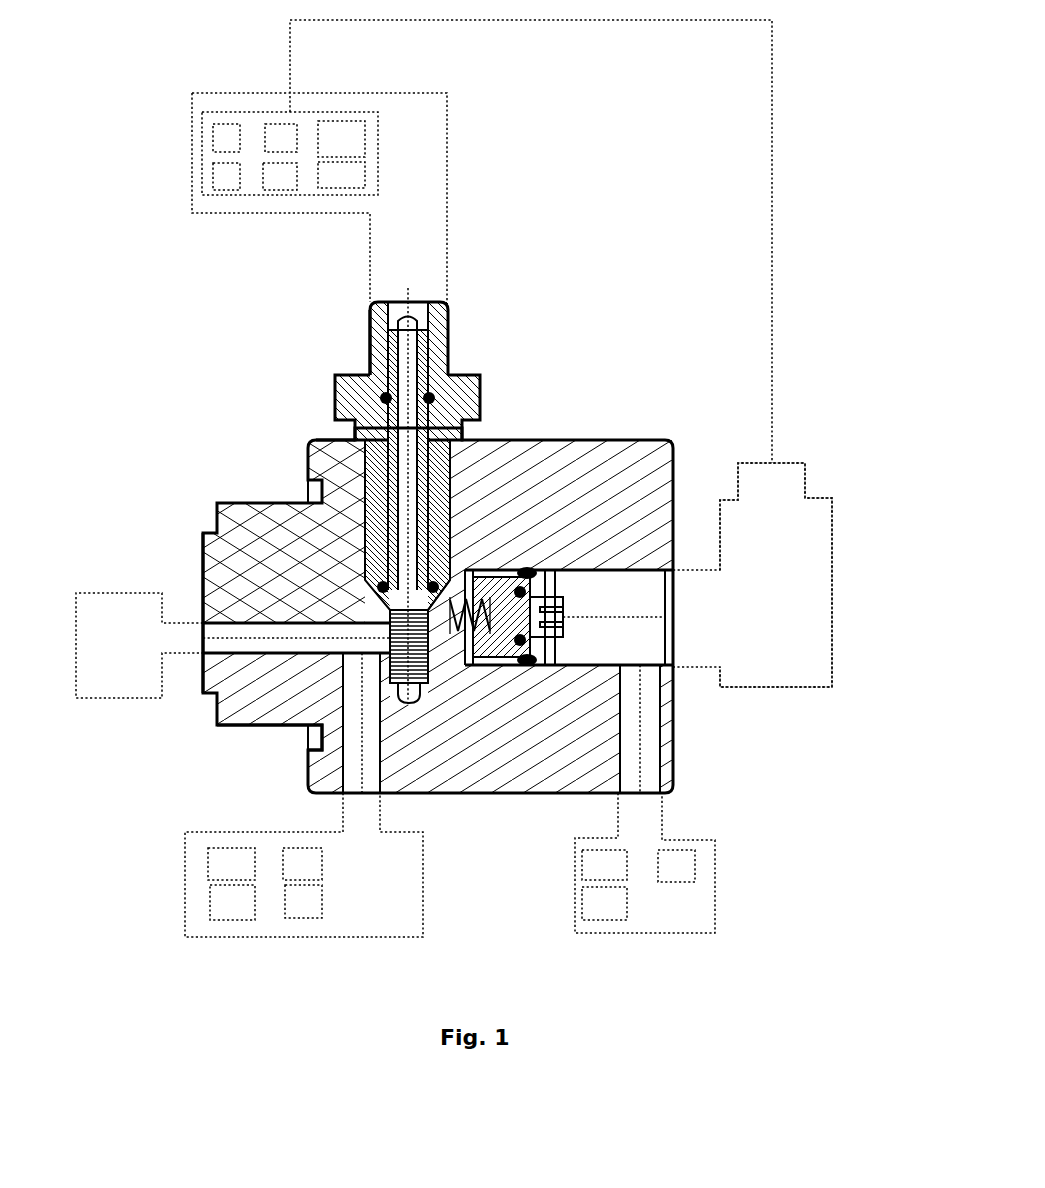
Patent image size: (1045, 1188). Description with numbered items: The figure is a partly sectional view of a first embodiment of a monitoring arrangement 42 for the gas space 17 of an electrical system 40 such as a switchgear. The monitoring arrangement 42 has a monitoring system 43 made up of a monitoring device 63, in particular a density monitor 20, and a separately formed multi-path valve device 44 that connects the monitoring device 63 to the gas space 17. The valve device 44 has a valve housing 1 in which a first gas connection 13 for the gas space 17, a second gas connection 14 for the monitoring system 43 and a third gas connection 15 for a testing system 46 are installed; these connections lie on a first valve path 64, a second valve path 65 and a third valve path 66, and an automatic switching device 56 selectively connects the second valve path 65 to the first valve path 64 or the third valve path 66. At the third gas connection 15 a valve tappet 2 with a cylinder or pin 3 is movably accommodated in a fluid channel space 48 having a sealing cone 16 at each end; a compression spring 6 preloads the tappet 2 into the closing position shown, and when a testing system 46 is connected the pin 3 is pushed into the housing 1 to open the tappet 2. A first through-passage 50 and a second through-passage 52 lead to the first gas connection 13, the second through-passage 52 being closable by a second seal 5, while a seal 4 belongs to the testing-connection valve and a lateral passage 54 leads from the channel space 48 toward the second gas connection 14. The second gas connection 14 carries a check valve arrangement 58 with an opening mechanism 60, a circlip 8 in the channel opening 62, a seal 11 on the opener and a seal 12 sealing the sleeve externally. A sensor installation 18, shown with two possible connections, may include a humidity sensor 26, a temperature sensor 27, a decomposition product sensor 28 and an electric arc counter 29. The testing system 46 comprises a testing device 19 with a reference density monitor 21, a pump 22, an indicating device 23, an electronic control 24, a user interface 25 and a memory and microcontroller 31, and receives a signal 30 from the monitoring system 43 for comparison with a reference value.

The valve housing 1 is at (487, 507).
The valve tappet 2 is at (320, 438).
The cylinder or pin 3 is at (447, 328).
The seal of valve of testing connection 4 is at (337, 380).
The second seal 5 is at (290, 575).
The compression spring 6 is at (413, 680).
The circlip 8 is at (600, 568).
The seal 11 is at (560, 568).
The seal 12 is at (535, 568).
The first gas connection 13 is at (203, 623).
The second gas connection 14 is at (673, 570).
The third gas connection 15 is at (427, 298).
The sealing cone 16 is at (435, 395).
The gas space 17 is at (96, 652).
The sensor installation 18 is at (268, 843).
The testing device 19 is at (238, 110).
The density monitor 20 is at (752, 610).
The reference sensor or reference density monitor 21 is at (345, 133).
The pump 22 is at (278, 132).
The indicating device 23 is at (225, 137).
The electronic control 24 is at (228, 177).
The user interface 25 is at (283, 173).
The humidity sensor 26 is at (225, 862).
The temperature sensor 27 is at (235, 903).
The decomposition product sensor 28 is at (310, 863).
The electric arc counter 29 is at (308, 900).
The signal 30 is at (770, 137).
The memory and microcontroller 31 is at (355, 172).
The electrical system 40 is at (657, 280).
The monitoring arrangement 42 is at (795, 208).
The monitoring system 43 is at (763, 760).
The multi-path valve device 44 is at (310, 710).
The testing system 46 is at (583, 120).
The fluid channel space 48 is at (358, 492).
The first through-passage 50 is at (383, 370).
The second through-passage 52 is at (380, 613).
The passage 54 is at (452, 572).
The switching device 56 is at (345, 413).
The check valve arrangement 58 is at (515, 672).
The opening mechanism 60 is at (565, 645).
The channel opening 62 is at (598, 570).
The monitoring device 63 is at (812, 627).
The first valve path 64 is at (200, 648).
The second valve path 65 is at (673, 665).
The third valve path 66 is at (373, 317).